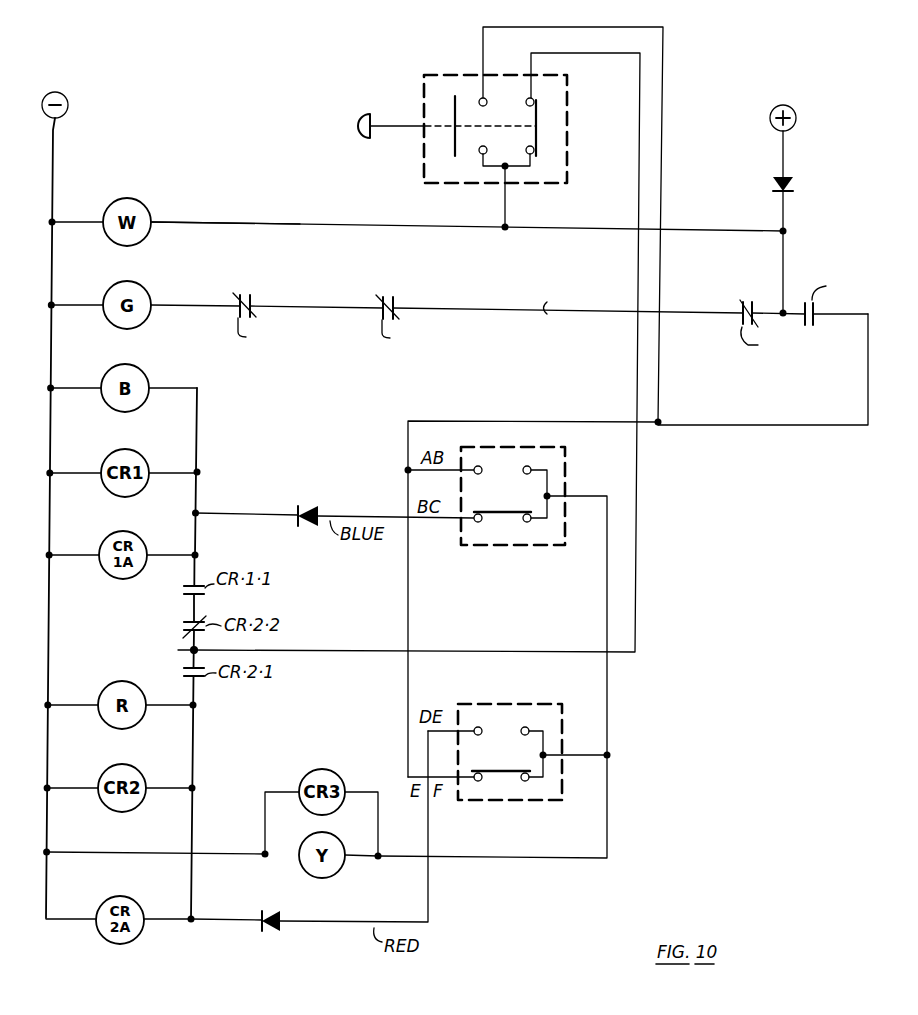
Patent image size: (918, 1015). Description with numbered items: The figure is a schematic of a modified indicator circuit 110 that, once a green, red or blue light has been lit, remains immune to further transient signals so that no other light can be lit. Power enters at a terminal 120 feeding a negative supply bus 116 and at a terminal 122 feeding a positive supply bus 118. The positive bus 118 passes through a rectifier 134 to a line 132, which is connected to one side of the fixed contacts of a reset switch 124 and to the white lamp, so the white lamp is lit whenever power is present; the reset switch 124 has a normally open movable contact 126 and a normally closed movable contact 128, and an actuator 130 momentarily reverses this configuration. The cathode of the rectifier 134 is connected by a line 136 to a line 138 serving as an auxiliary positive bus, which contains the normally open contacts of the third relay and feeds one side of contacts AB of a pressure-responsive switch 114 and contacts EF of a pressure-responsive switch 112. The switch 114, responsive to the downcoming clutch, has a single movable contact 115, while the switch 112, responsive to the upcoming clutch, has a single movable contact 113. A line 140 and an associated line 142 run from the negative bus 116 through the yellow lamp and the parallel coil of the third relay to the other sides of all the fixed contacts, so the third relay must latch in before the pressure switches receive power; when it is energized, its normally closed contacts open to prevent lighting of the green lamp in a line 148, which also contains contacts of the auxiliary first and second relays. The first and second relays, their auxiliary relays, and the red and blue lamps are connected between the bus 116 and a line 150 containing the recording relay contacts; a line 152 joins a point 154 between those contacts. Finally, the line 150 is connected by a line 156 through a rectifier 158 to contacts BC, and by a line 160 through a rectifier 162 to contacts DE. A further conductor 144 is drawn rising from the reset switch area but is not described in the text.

The modified circuit 110 is at (237, 201).
The pressure-responsive switch 112 is at (522, 736).
The movable contact 113 is at (497, 771).
The pressure-responsive switch 114 is at (535, 486).
The movable contact 115 is at (497, 512).
The negative supply bus 116 is at (48, 620).
The positive supply bus 118 is at (784, 153).
The terminal 120 is at (68, 105).
The terminal 122 is at (797, 118).
The reset switch 124 is at (487, 135).
The movable contact 126 is at (452, 100).
The movable contact 128 is at (540, 108).
The actuator 130 is at (412, 126).
The line 132 is at (692, 231).
The rectifier 134 is at (795, 188).
The line 136 is at (785, 248).
The auxiliary positive bus line 138 is at (780, 427).
The line 140 is at (608, 780).
The line 142 is at (607, 563).
The conductor from switch 124 144 is at (664, 103).
The line 148 is at (480, 308).
The line 150 is at (198, 483).
The line 152 is at (348, 650).
The point 154 is at (178, 650).
The line 156 is at (257, 513).
The rectifier 158 is at (315, 505).
The line 160 is at (200, 924).
The rectifier 162 is at (270, 931).